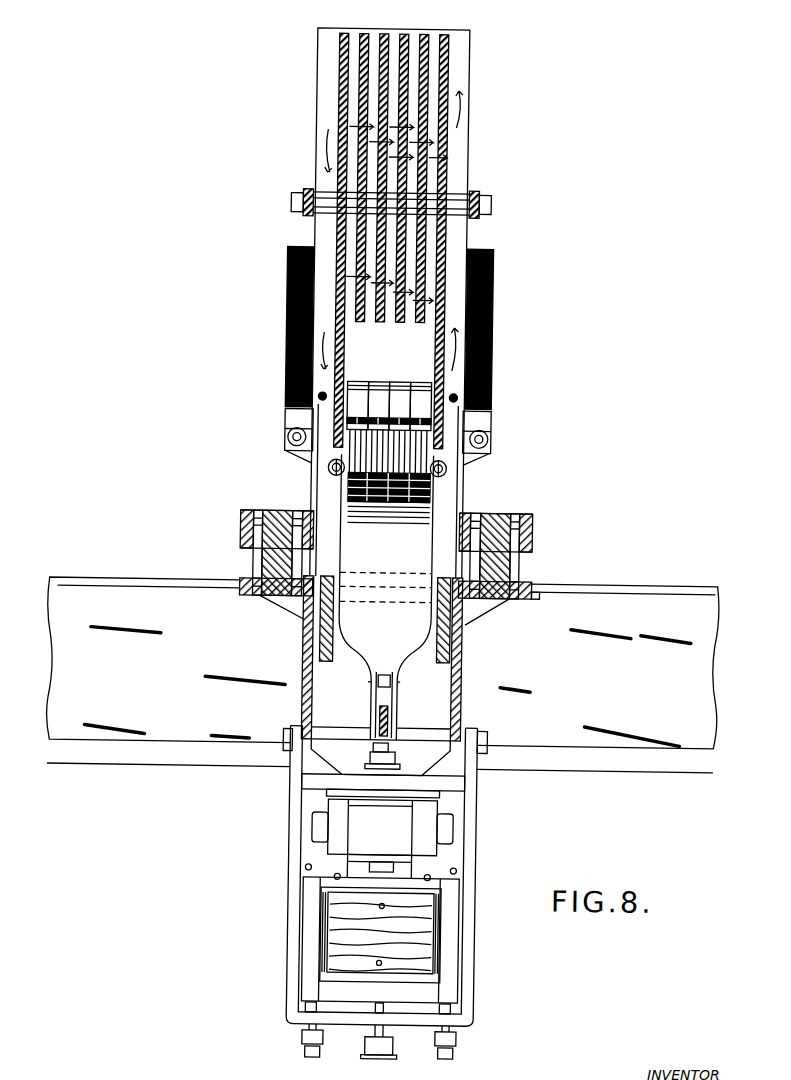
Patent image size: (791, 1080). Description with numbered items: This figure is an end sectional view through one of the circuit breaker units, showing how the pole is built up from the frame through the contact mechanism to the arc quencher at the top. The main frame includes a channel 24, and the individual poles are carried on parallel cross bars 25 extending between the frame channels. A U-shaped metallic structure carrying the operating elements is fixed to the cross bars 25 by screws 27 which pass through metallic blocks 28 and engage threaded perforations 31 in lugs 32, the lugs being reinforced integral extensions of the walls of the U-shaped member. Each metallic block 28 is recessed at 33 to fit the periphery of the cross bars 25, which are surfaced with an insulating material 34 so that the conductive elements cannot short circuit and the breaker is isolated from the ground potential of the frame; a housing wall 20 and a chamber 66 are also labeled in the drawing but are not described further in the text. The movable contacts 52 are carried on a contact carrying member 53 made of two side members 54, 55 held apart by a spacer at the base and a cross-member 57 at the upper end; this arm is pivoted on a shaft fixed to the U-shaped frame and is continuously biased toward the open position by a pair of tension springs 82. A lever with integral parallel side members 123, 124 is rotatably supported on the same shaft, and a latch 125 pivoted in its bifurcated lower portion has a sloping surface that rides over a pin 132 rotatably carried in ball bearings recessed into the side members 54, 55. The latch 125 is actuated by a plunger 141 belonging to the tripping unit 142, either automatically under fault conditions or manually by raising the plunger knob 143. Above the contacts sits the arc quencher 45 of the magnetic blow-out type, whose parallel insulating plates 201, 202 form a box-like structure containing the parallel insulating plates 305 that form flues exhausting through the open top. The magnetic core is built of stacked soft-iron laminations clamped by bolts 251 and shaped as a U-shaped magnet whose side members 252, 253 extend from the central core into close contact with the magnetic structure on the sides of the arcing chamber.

The magnet plates 305 is at (416, 34).
The arc quencher 45 is at (447, 28).
The insulating plate 201 is at (331, 112).
The insulating plate 202 is at (441, 133).
The side member 253 is at (283, 268).
The side member 252 is at (489, 270).
The bolt 251 is at (286, 439).
The movable contact 52 is at (367, 382).
The cross-member 57 is at (424, 503).
The tension spring 82 is at (327, 468).
The contact carrying member 53 is at (426, 560).
The side member 55 is at (343, 648).
The side member 54 is at (397, 654).
The latch 125 is at (390, 703).
The pin 132 is at (394, 726).
The metallic block 28 is at (241, 532).
The cross bar 25 is at (262, 570).
The screw 27 is at (258, 556).
The insulating material 34 is at (258, 498).
The recess 33 is at (278, 512).
The threaded perforation 31 is at (533, 596).
The lug 32 is at (500, 605).
The channel 24 is at (583, 585).
The housing 20 is at (468, 679).
The side member 123 is at (328, 642).
The side member 124 is at (452, 645).
The chamber 66 is at (345, 701).
The plunger 141 is at (380, 754).
The tripping unit 142 is at (399, 838).
The plunger knob 143 is at (400, 1076).